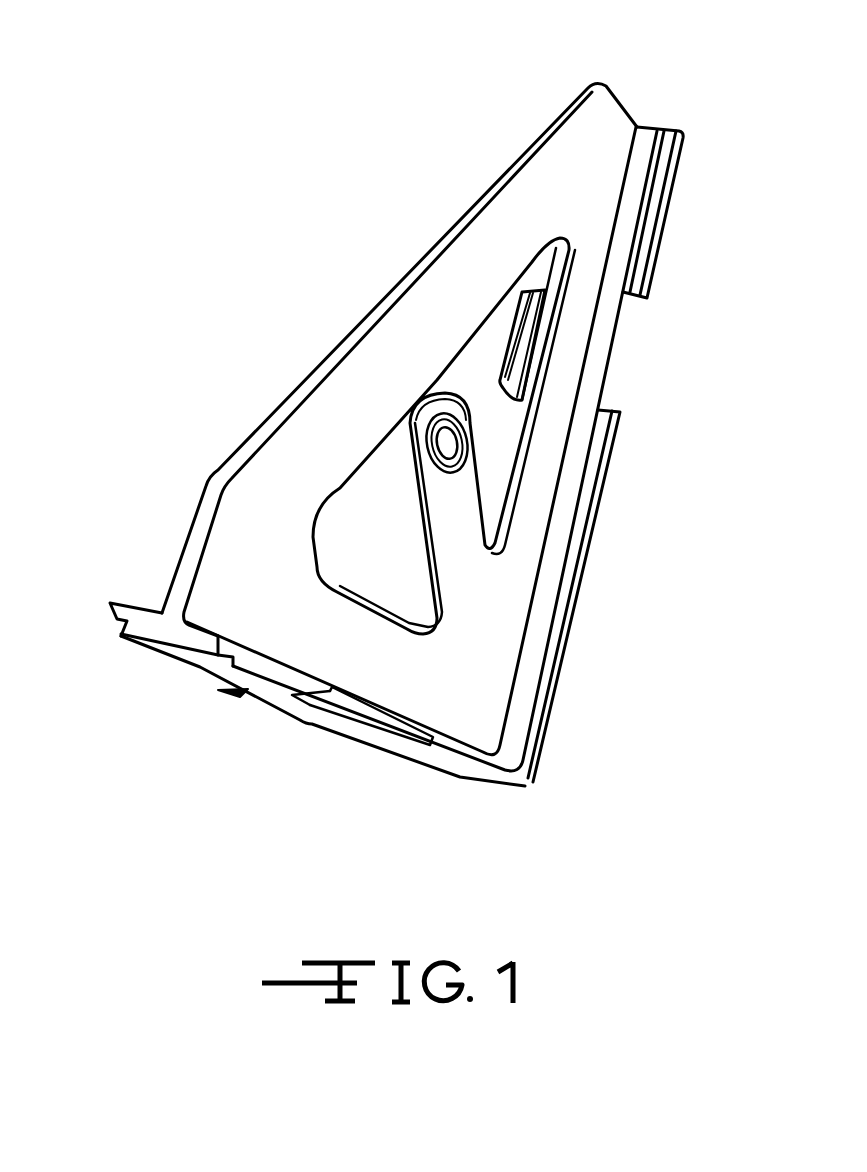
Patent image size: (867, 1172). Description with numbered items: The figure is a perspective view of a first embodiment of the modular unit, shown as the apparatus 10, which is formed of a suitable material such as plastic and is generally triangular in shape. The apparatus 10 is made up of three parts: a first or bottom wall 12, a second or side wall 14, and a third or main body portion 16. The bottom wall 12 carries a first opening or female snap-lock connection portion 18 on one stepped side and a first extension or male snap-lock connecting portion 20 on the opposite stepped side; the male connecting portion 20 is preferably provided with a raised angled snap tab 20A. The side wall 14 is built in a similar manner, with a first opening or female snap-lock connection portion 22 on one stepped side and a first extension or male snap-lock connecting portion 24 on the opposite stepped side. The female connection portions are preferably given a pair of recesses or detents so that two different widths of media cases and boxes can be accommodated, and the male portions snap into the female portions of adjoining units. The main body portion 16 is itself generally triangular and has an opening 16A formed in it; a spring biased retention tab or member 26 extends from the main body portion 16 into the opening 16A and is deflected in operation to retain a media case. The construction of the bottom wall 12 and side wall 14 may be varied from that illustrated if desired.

The apparatus 10 is at (626, 603).
The first or bottom wall 12 is at (652, 127).
The second or side wall 14 is at (197, 660).
The third or main body portion 16 is at (525, 158).
The opening 16A is at (357, 493).
The first opening or first female snap-lock connection portion 18 is at (616, 336).
The first extension or first male snap-lock connecting portion 20 is at (518, 367).
The raised angled snap tab 20A is at (523, 292).
The first opening or first female snap-lock connection portion 22 is at (367, 716).
The first extension or first male snap-lock connecting portion 24 is at (247, 704).
The spring biased retention tab or member 26 is at (448, 494).